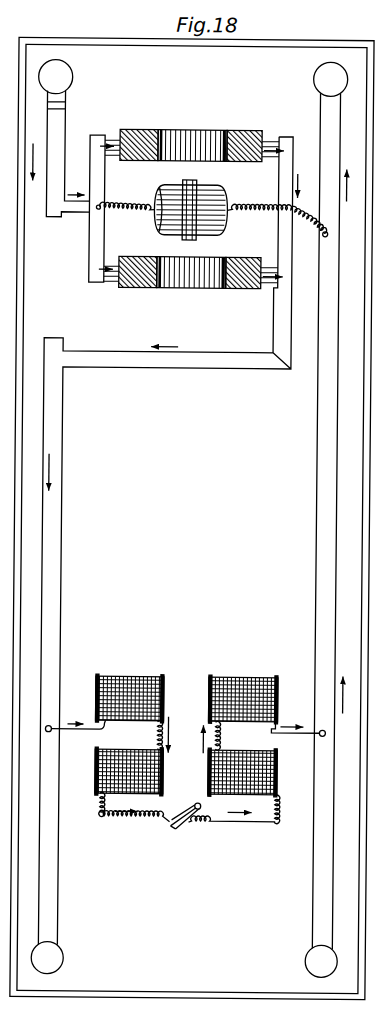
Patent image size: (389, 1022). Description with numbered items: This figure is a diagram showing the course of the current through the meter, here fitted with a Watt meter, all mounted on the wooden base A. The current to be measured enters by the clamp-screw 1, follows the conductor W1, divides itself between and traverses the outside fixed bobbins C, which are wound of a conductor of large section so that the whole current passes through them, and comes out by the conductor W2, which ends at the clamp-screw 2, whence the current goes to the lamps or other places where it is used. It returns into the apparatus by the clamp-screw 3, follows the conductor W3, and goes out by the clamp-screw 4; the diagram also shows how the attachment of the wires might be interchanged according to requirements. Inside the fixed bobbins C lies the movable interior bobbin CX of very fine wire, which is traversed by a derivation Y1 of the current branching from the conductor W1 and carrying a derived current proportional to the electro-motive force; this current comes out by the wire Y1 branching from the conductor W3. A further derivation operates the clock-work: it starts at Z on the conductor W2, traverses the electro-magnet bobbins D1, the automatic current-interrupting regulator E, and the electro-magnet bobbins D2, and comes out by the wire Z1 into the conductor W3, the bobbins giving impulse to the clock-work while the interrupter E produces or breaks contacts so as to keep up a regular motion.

The clamp-screw 1 is at (62, 77).
The clamp-screw 2 is at (53, 958).
The clamp-screw 3 is at (314, 961).
The clamp-screw 4 is at (324, 79).
The wooden base A is at (192, 518).
The conductor W1 is at (66, 154).
The conductor W2 is at (288, 252).
The conductor W3 is at (335, 282).
The fixed bobbins C is at (192, 141).
The movable interior bobbin CX is at (224, 195).
The derivation wire Y1 is at (128, 214).
The electro-magnet bobbins D1 is at (129, 677).
The electro-magnet bobbins D2 is at (239, 678).
The derivation point Z is at (75, 720).
The wire Z1 is at (287, 734).
The automatic current-interrupting regulator E is at (185, 811).